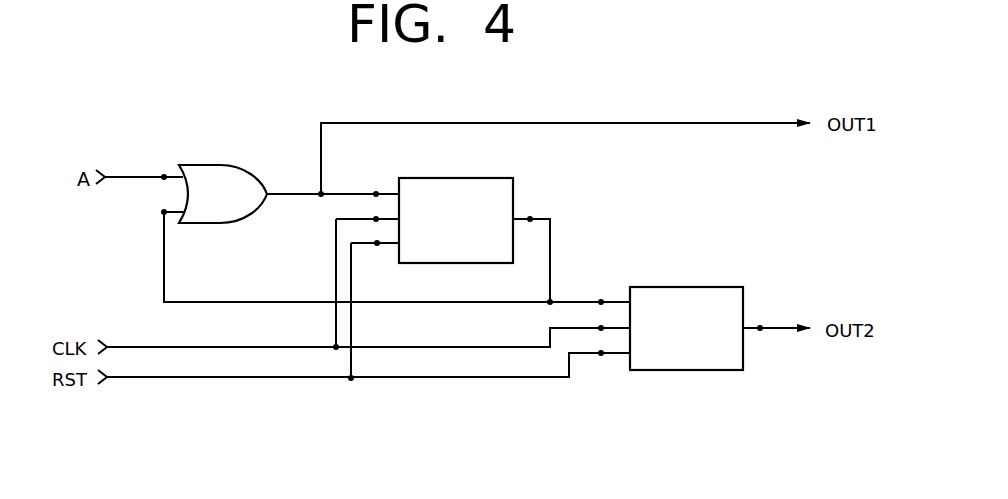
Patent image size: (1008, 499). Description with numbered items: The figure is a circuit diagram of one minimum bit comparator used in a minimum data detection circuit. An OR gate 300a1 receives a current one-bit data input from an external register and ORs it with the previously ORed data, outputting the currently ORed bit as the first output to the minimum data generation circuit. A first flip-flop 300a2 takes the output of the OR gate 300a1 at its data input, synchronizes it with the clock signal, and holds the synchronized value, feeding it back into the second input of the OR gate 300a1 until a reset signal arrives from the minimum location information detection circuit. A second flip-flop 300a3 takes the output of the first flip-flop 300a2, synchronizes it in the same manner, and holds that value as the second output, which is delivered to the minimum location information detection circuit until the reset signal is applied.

The OR gate 300a1 is at (225, 164).
The first flip-flop 300a2 is at (452, 178).
The second flip-flop 300a3 is at (672, 287).